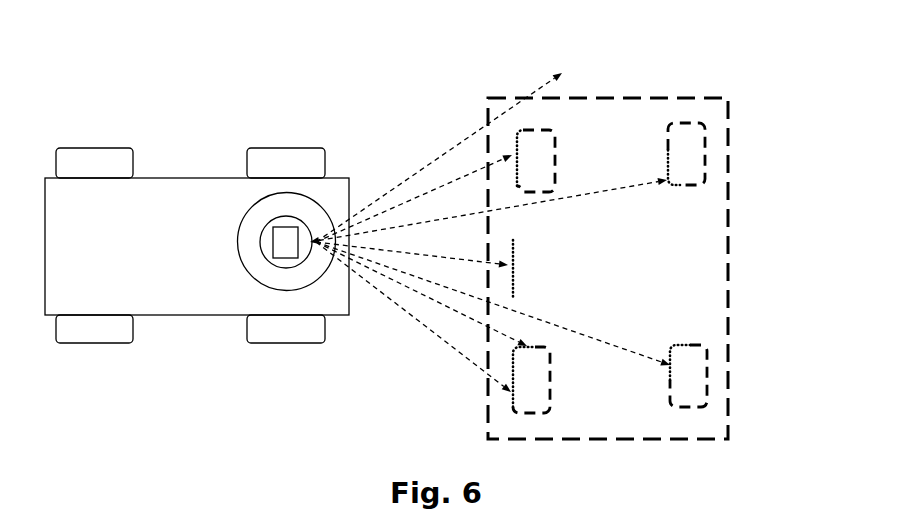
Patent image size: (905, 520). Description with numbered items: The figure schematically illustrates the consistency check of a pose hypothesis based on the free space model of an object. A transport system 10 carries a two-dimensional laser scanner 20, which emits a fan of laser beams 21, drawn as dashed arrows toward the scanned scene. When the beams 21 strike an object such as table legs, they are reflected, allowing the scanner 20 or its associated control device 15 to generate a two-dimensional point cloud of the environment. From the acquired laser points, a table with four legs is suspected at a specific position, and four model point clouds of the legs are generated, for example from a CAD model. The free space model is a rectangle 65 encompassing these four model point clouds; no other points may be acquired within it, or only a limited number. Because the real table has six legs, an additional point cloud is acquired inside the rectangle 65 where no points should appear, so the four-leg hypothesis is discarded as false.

The transport system 10 is at (86, 121).
The control device 15 is at (263, 268).
The 2D laser scanner 20 is at (279, 238).
The laser beams 21 is at (358, 164).
The free space model rectangle 65 is at (733, 148).